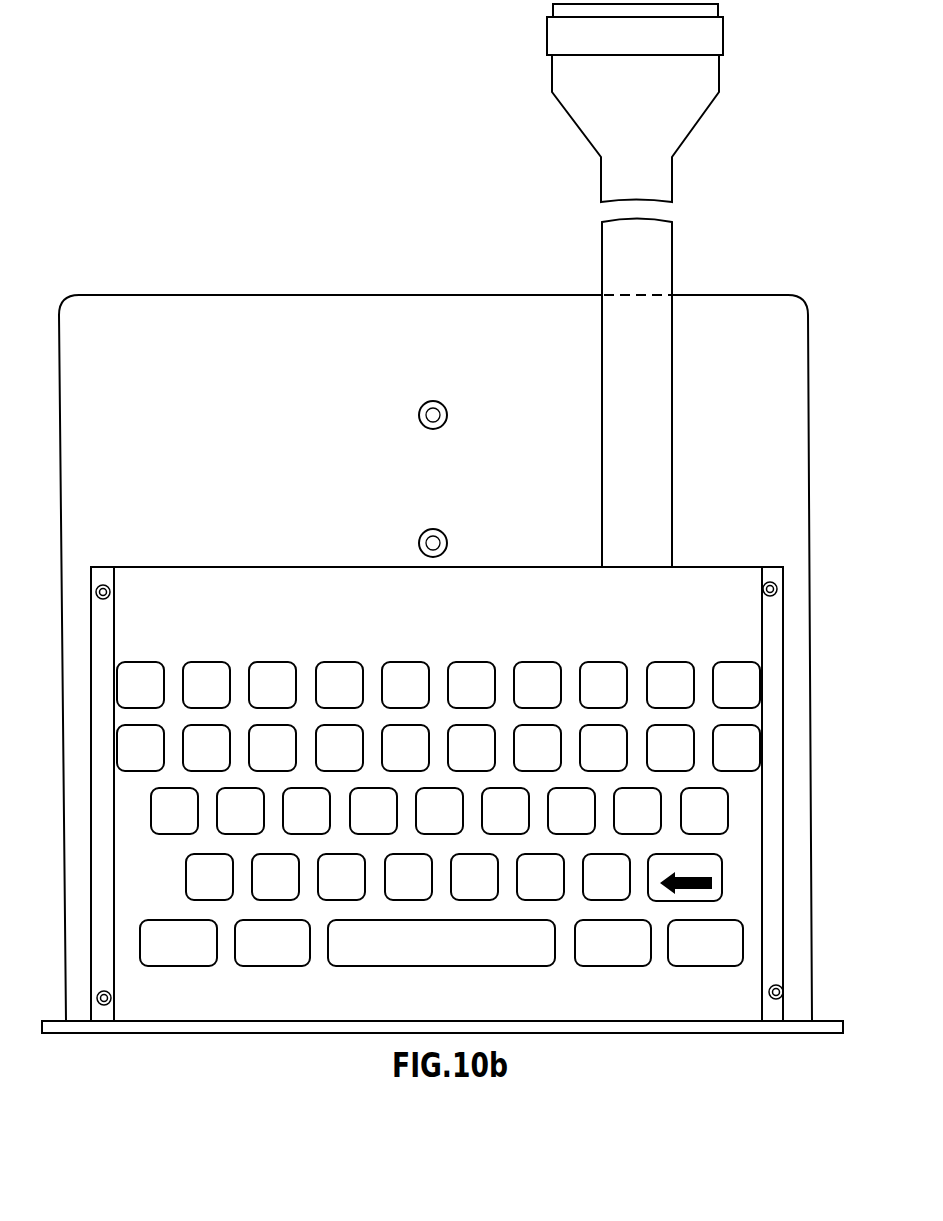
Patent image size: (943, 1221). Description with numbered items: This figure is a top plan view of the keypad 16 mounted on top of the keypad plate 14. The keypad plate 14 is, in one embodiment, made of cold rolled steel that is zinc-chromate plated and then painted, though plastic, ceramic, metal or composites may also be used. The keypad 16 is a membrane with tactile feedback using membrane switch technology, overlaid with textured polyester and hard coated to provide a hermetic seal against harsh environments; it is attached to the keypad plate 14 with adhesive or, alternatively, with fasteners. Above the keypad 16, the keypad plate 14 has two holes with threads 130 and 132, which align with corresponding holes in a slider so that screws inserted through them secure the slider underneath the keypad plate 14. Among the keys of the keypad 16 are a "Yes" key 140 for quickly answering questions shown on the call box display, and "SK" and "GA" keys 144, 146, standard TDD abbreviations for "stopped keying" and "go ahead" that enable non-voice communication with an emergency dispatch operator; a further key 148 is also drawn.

The keypad plate 14 is at (732, 465).
The keypad 16 is at (471, 794).
The hole with threads 130 is at (434, 537).
The hole with threads 132 is at (433, 409).
The "Yes" key 140 is at (178, 960).
The "SK" key 144 is at (283, 960).
The "GA" key 146 is at (625, 960).
The NO key 148 is at (697, 960).